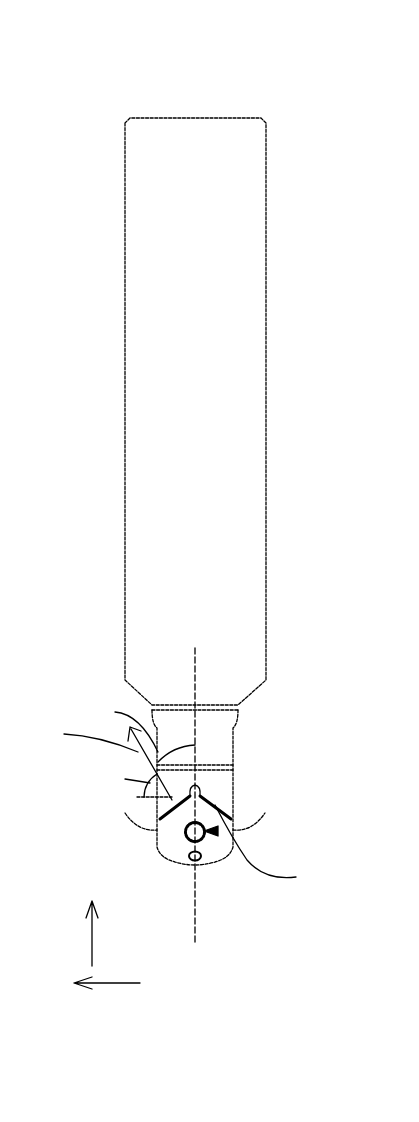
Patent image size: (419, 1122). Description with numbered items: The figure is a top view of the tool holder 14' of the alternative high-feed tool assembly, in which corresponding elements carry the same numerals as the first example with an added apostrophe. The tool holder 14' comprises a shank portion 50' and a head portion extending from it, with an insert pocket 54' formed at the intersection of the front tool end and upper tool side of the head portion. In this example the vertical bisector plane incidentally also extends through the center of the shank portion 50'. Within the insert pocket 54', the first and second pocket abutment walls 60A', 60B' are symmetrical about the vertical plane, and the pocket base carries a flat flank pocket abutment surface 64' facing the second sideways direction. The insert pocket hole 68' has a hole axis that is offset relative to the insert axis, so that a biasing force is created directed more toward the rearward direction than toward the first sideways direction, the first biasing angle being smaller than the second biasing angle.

The tool holder 14' is at (206, 553).
The shank portion 50' is at (254, 414).
The insert pocket 54' is at (194, 846).
The first pocket abutment wall 60A' is at (109, 813).
The second pocket abutment wall 60B' is at (280, 814).
The flank pocket abutment surface 64' is at (214, 885).
The insert pocket hole 68' is at (156, 863).